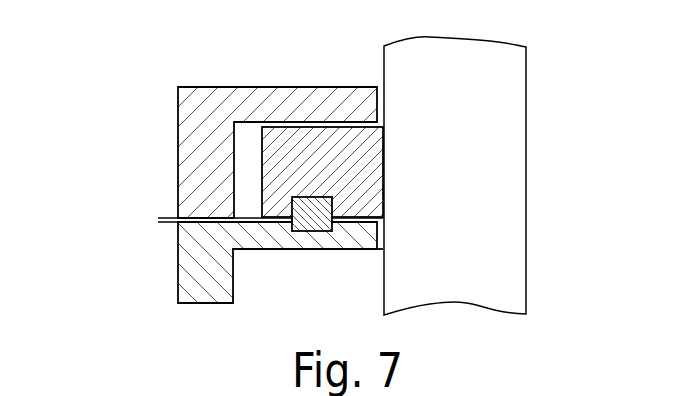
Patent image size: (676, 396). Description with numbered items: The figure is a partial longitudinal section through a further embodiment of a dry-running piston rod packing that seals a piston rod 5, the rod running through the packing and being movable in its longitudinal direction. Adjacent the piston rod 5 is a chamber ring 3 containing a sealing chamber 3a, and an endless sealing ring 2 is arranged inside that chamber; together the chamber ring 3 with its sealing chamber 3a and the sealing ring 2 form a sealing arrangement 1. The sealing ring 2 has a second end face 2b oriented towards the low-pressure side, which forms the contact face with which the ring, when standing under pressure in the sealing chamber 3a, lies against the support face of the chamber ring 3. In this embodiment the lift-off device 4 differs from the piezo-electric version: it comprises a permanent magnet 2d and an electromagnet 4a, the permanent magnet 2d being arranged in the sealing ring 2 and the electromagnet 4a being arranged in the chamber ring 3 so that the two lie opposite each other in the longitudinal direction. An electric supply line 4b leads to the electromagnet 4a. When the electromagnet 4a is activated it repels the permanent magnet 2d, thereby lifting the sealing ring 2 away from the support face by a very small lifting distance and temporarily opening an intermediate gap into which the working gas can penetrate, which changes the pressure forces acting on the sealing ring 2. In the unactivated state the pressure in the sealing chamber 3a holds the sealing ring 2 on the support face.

The sealing arrangement 1 is at (83, 87).
The sealing ring 2 is at (325, 133).
The second end face 2b is at (368, 232).
The permanent magnet 2d is at (298, 200).
The chamber ring 3 is at (192, 102).
The sealing chamber 3a is at (247, 131).
The lift-off device 4 is at (312, 226).
The electromagnet 4a is at (312, 214).
The electric supply line 4b is at (172, 224).
The piston rod 5 is at (500, 183).